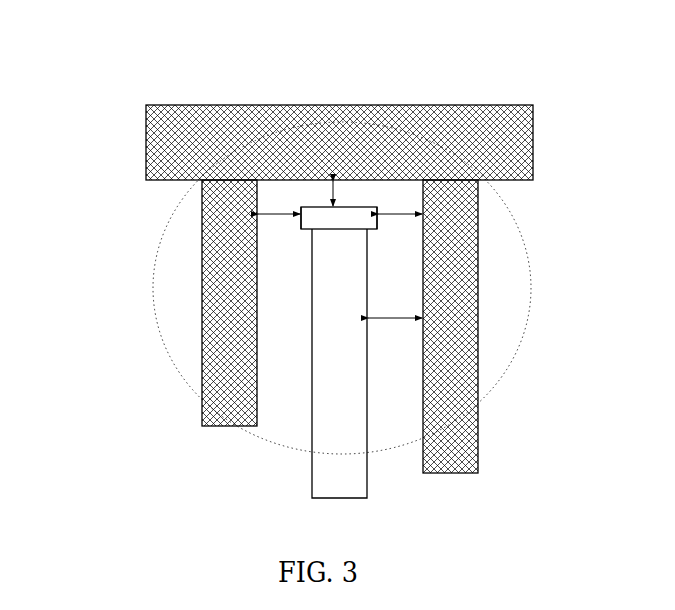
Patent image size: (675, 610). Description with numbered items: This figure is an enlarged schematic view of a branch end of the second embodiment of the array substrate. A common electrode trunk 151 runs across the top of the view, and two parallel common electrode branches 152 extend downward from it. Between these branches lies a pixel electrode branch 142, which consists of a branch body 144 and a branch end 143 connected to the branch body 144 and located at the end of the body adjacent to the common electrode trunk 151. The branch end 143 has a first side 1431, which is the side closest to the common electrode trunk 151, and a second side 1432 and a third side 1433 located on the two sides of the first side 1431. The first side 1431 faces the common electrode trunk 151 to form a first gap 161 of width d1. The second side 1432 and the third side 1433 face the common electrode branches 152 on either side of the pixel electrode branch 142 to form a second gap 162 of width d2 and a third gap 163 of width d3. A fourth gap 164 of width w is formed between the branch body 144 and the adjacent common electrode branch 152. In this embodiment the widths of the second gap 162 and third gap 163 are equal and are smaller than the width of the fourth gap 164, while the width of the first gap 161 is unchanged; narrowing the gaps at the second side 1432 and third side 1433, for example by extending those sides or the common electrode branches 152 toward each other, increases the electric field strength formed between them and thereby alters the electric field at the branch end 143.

The common electrode trunk 151 is at (172, 135).
The common electrode branch 152 is at (202, 318).
The fourth gap 164 is at (415, 326).
The branch end 143 is at (325, 271).
The first side 1431 is at (347, 208).
The second side 1432 is at (300, 213).
The third side 1433 is at (383, 215).
The pixel electrode branch 142 is at (312, 438).
The first gap 161 is at (318, 200).
The second gap 162 is at (258, 226).
The third gap 163 is at (416, 218).
The branch body 144 is at (345, 352).